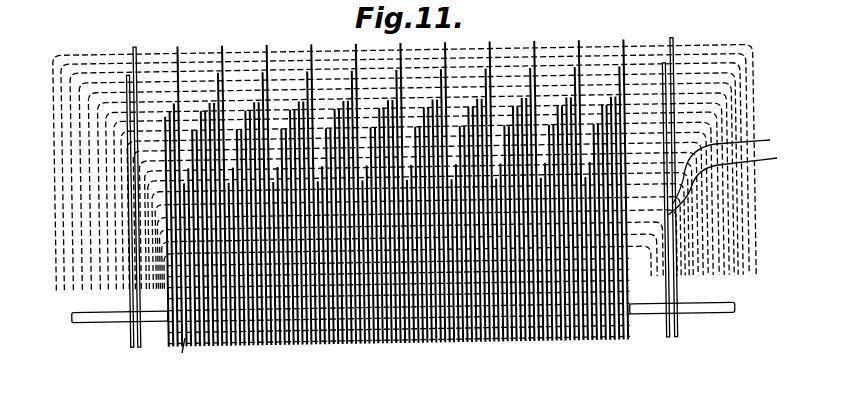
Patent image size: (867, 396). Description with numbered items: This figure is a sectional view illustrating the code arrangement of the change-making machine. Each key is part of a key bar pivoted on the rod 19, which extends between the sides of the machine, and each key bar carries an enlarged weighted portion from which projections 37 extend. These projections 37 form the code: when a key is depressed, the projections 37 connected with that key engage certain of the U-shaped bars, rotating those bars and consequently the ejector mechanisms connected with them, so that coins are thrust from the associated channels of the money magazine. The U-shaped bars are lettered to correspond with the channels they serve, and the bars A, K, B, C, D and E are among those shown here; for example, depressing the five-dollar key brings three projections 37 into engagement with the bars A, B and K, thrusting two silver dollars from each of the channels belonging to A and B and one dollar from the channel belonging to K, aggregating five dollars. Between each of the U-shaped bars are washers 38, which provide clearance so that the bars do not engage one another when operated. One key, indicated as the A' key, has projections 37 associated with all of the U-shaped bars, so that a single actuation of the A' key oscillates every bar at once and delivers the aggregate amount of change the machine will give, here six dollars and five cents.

The projections 37 is at (180, 98).
The washers 38 is at (318, 340).
The rod 19 is at (102, 318).
The U-shaped bar A is at (420, 165).
The U-shaped bar K is at (752, 78).
The U-shaped bar B is at (755, 95).
The U-shaped bar C is at (727, 128).
The U-shaped bar D is at (732, 170).
The U-shaped bar E is at (729, 184).
The A' key A' is at (181, 354).